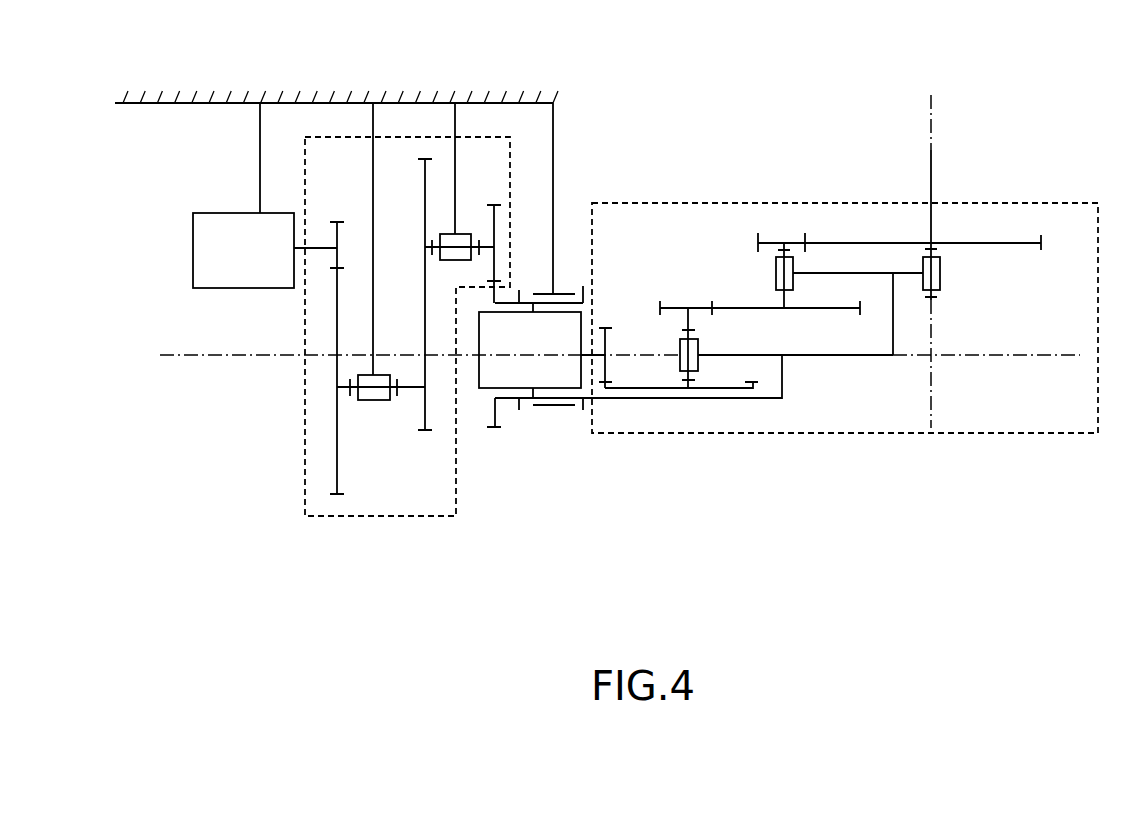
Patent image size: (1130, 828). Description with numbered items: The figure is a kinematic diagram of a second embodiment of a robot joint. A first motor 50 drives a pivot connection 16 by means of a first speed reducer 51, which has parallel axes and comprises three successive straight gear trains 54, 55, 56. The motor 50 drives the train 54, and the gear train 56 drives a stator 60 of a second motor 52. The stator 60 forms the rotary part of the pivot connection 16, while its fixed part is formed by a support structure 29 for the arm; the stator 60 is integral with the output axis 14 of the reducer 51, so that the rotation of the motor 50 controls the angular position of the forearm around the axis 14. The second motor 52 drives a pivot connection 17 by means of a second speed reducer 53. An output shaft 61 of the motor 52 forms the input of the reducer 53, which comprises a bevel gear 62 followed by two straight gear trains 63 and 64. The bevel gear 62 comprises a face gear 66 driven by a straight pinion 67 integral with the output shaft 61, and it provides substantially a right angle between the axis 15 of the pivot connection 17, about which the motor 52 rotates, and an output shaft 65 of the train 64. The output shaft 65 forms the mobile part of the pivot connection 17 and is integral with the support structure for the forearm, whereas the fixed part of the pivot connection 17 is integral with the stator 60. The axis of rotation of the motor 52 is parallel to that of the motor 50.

The axis 14 is at (1012, 355).
The axis 15 is at (930, 150).
The pivot connection 16 is at (568, 292).
The pivot connection 17 is at (940, 270).
The support structure 29 is at (202, 103).
The first motor 50 is at (225, 263).
The first speed reducer 51 is at (377, 516).
The second motor 52 is at (515, 347).
The second speed reducer 53 is at (880, 433).
The straight gear train 54 is at (337, 480).
The straight gear train 55 is at (423, 312).
The straight gear train 56 is at (492, 232).
The stator 60 is at (238, 212).
The output shaft 61 is at (600, 350).
The bevel gear 62 is at (753, 487).
The straight gear train 63 is at (743, 308).
The straight gear train 64 is at (1010, 244).
The output shaft 65 is at (930, 195).
The face gear 66 is at (708, 392).
The straight pinion 67 is at (607, 368).